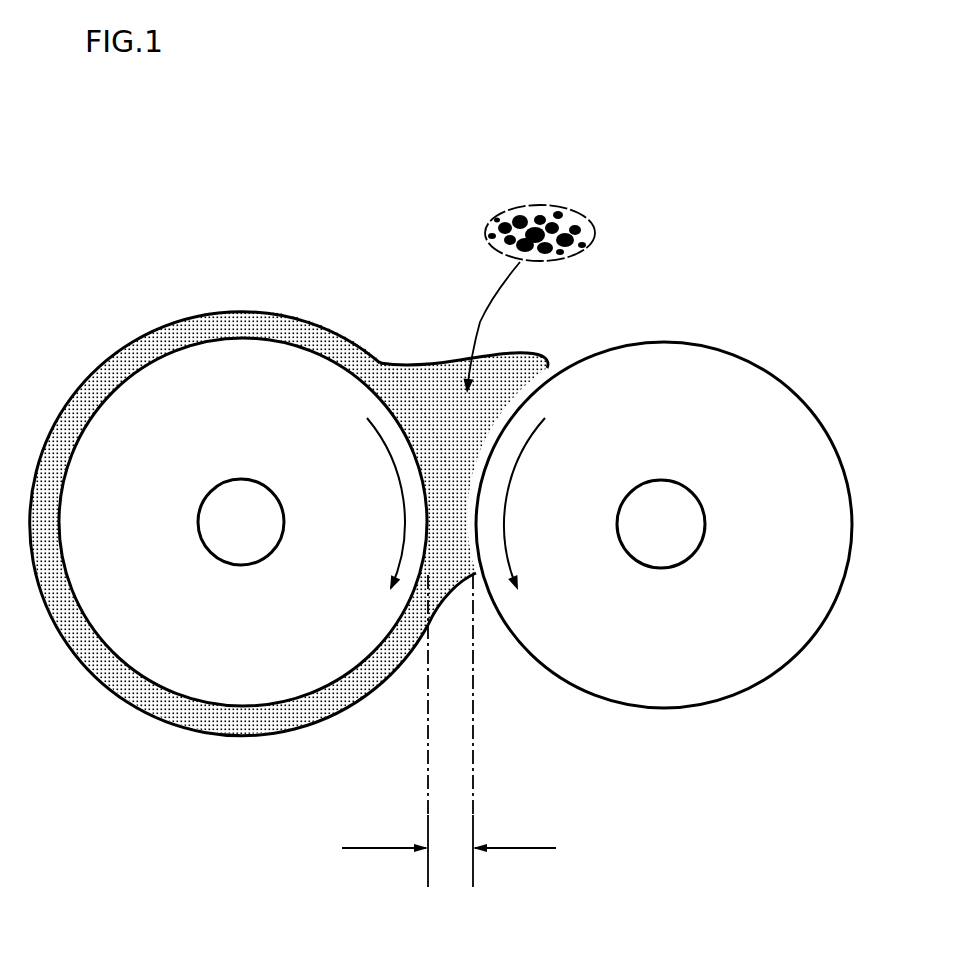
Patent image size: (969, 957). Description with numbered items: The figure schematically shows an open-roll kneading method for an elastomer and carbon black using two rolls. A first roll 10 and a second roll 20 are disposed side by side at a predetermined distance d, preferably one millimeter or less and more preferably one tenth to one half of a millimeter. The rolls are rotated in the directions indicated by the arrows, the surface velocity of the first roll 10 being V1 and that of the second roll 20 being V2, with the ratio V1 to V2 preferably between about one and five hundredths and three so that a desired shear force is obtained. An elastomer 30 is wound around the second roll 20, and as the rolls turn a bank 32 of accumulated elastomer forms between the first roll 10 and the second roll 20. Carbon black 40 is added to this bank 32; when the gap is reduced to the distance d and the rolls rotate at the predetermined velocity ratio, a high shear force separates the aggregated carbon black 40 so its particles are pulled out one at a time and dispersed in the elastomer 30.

The first roll 10 is at (717, 643).
The second roll 20 is at (140, 642).
The elastomer 30 is at (150, 340).
The bank 32 is at (490, 372).
The carbon black 40 is at (558, 219).
The surface velocity of the first roll V1 is at (507, 492).
The surface velocity of the second roll V2 is at (400, 482).
The distance between the rolls d is at (449, 731).